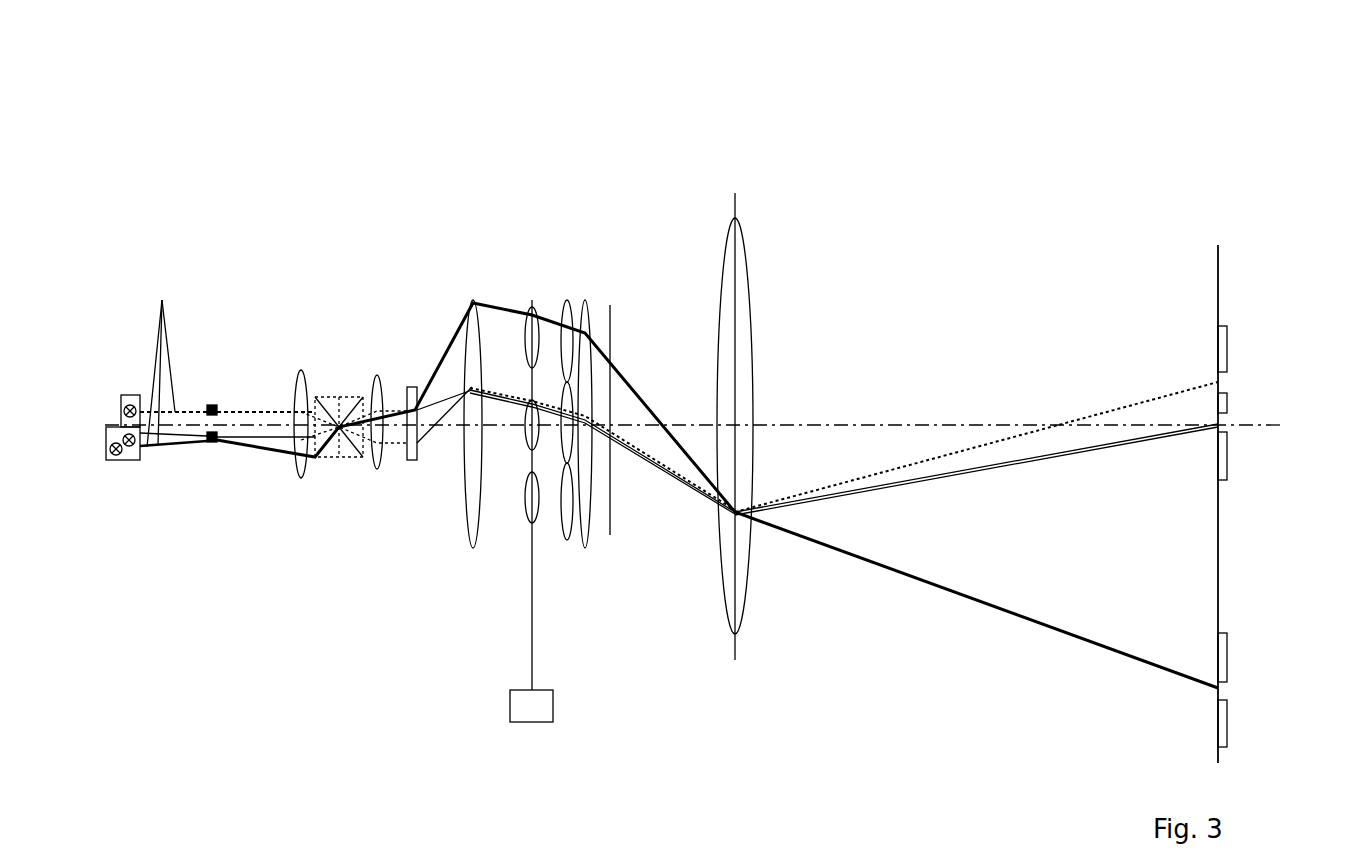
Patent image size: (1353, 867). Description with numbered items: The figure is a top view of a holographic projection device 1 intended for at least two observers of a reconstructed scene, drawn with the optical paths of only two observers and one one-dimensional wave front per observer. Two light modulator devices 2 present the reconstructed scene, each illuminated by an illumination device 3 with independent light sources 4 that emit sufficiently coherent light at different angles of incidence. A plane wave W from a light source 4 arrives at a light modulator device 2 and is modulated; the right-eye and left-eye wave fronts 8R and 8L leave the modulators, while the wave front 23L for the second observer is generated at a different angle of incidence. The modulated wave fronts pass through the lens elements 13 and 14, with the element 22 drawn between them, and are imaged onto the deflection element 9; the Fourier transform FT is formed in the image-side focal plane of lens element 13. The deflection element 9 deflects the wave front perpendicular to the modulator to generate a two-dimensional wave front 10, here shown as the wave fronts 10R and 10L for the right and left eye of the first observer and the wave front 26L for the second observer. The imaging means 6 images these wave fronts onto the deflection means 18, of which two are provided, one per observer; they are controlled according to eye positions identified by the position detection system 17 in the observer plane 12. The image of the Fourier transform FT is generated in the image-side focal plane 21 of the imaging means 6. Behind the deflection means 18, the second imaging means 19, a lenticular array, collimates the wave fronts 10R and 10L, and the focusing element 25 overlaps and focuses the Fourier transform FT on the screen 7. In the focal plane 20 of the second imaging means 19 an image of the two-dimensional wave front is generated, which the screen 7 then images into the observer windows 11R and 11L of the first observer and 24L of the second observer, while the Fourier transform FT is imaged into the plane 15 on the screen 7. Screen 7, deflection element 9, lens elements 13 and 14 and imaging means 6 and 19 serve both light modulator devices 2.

The holographic projection device 1 is at (406, 82).
The light modulator device 2 is at (209, 405).
The illumination device 3 is at (125, 395).
The light source 4 is at (133, 395).
The wave W is at (161, 357).
The modulated wave front for right eye 8R is at (243, 410).
The modulated wave front for left eye 8L is at (253, 443).
The lens element 13 is at (301, 370).
The beam splitter cube 22 is at (336, 400).
The Fourier transform FT is at (338, 450).
The lens element 14 is at (374, 375).
The deflection element 9 is at (408, 462).
The two-dimensional wave front 10 is at (418, 352).
The wave front for left eye 10L is at (438, 405).
The wave front for right eye 10R is at (426, 445).
The imaging means 6 is at (466, 548).
The two-dimensional wave front 26L is at (449, 348).
The modulated wave front 23L is at (285, 460).
The deflection means 18 is at (530, 307).
The position detection system 17 is at (531, 709).
The image-side focal plane of imaging means 21 is at (541, 522).
The focusing element 25 is at (586, 305).
The second imaging means 19 is at (580, 545).
The focal plane of second imaging means 20 is at (612, 537).
The screen 7 is at (725, 240).
The plane on the screen 15 is at (740, 645).
The observer window for right eye 11R is at (1228, 385).
The observer window for left eye 11L is at (1228, 425).
The observer window for left eye 24L is at (1228, 688).
The observer plane 12 is at (1218, 760).